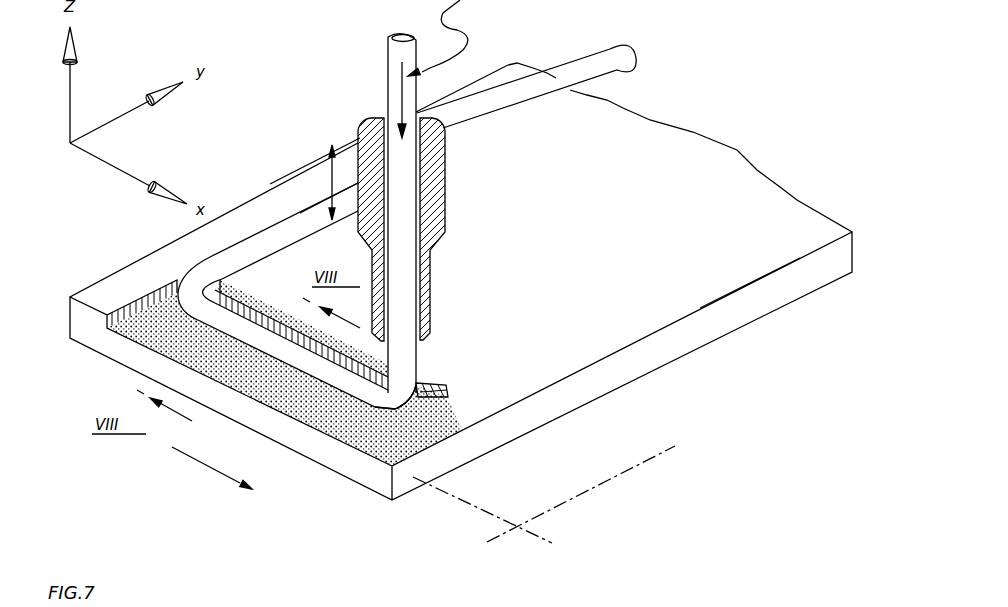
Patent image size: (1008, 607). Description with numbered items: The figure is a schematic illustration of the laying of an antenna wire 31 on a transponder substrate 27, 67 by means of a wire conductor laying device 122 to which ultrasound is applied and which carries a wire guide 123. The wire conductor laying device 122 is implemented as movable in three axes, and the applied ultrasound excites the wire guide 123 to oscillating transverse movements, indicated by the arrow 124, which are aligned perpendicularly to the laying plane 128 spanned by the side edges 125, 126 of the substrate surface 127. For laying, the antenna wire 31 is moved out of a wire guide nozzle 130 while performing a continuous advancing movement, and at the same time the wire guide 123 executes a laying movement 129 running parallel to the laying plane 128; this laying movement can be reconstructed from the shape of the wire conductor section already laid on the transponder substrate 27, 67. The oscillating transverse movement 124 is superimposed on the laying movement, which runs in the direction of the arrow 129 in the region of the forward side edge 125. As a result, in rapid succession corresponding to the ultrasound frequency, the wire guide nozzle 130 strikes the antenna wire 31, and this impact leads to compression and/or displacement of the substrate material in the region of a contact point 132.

The transponder substrate 27 is at (469, 281).
The transponder substrate 67 is at (776, 197).
The wire conductor laying device 122 is at (496, 194).
The wire guide 123 is at (446, 295).
The oscillating transverse movement 124 is at (322, 184).
The side edge 125 is at (92, 335).
The side edge 126 is at (772, 297).
The substrate surface 127 is at (274, 262).
The laying plane 128 is at (556, 481).
The laying movement 129 is at (182, 458).
The wire guide nozzle 130 is at (440, 361).
The antenna wire 31 is at (436, 394).
The contact point 132 is at (442, 416).